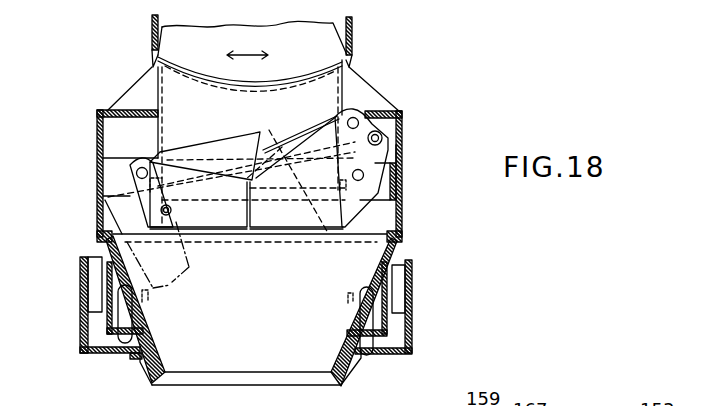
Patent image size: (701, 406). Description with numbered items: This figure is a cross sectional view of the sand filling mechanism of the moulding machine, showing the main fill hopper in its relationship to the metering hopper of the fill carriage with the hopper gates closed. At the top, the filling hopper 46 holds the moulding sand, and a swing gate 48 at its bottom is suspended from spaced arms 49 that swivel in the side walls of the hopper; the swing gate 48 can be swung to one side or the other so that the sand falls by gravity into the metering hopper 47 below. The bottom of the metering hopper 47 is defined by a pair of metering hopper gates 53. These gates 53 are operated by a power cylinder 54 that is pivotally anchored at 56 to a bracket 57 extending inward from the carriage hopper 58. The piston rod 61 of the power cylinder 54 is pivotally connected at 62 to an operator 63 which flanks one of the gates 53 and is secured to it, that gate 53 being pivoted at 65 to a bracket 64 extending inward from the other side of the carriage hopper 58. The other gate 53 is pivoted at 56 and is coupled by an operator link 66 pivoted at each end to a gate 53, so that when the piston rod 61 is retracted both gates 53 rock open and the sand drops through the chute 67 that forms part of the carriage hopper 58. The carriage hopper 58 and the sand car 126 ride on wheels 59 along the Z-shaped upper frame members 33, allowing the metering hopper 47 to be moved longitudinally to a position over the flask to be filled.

The upper frame members 33 is at (80, 352).
The filling hopper 46 is at (152, 32).
The metering hopper 47 is at (342, 83).
The swing gate 48 is at (287, 72).
The spaced arms 49 is at (247, 43).
The metering hopper gates 53 is at (220, 230).
The power cylinder 54 is at (222, 142).
The pivot anchor 56 is at (142, 158).
The bracket 57 is at (118, 148).
The carriage hopper 58 is at (402, 165).
The wheels 59 is at (122, 312).
The piston rod 61 is at (298, 133).
The pivotal connection 62 is at (356, 114).
The operator 63 is at (347, 207).
The bracket 64 is at (402, 153).
The gate pivot 65 is at (402, 146).
The operator link 66 is at (272, 131).
The chute 67 is at (163, 360).
The sand car 126 is at (389, 258).